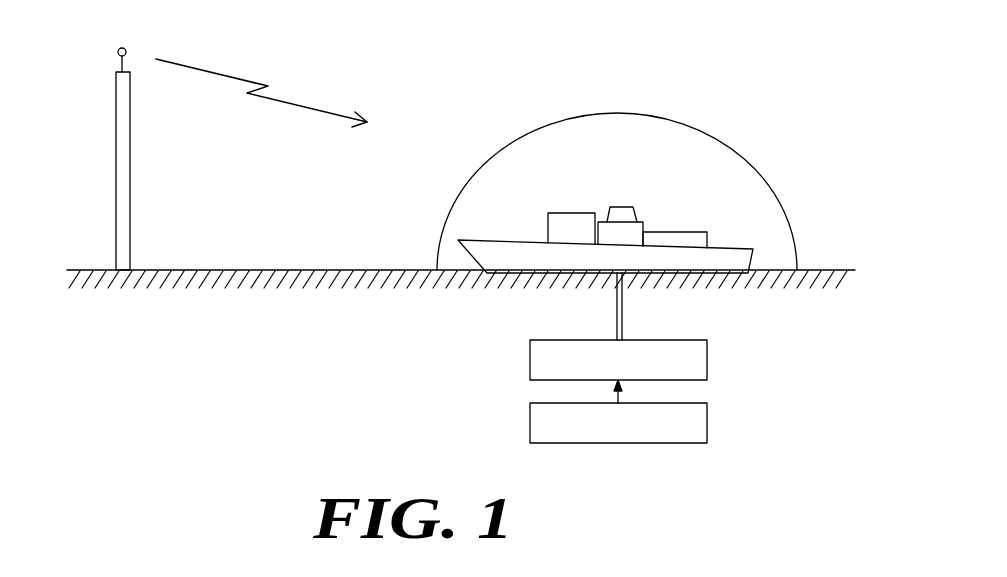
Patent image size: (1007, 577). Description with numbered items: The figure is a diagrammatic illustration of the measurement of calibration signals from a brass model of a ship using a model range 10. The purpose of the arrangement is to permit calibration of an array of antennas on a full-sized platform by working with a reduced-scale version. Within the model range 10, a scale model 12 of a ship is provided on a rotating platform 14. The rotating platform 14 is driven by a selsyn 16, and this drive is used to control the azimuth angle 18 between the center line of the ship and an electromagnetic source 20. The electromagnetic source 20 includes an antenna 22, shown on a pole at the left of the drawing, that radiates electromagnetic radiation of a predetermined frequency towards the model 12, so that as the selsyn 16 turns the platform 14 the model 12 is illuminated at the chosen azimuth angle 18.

The model range 10 is at (547, 66).
The scale model 12 is at (675, 215).
The rotating platform 14 is at (507, 275).
The selsyn 16 is at (707, 358).
The azimuth angle 18 is at (707, 425).
The electromagnetic source 20 is at (168, 53).
The antenna 22 is at (116, 54).